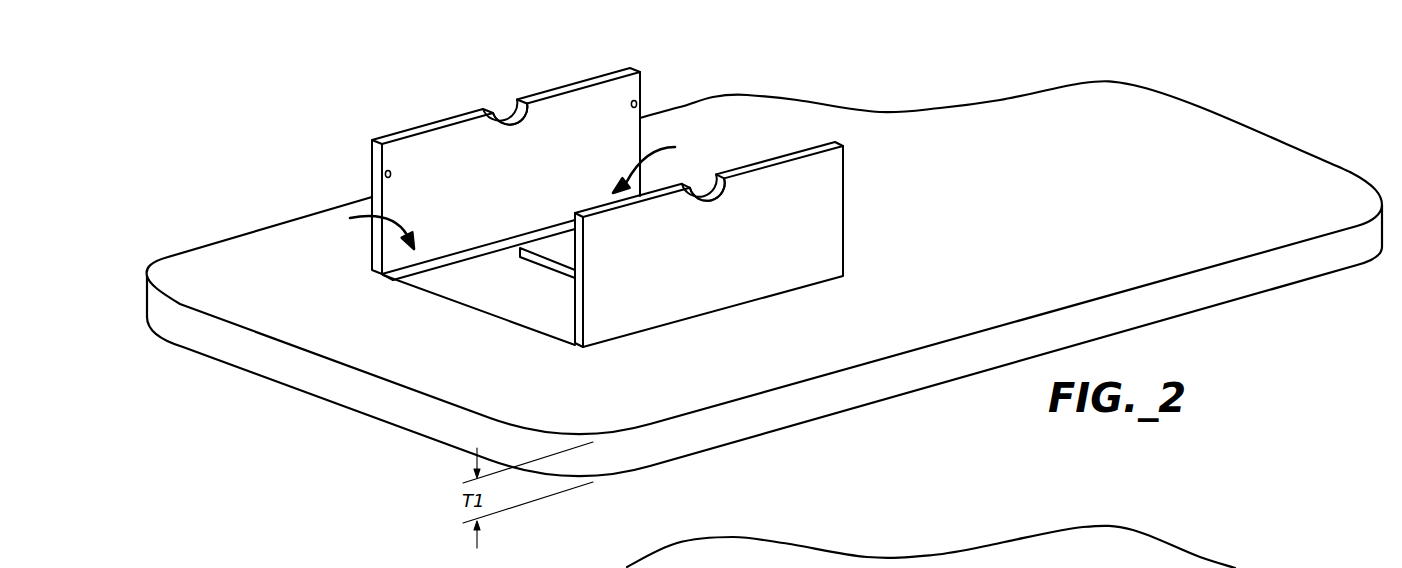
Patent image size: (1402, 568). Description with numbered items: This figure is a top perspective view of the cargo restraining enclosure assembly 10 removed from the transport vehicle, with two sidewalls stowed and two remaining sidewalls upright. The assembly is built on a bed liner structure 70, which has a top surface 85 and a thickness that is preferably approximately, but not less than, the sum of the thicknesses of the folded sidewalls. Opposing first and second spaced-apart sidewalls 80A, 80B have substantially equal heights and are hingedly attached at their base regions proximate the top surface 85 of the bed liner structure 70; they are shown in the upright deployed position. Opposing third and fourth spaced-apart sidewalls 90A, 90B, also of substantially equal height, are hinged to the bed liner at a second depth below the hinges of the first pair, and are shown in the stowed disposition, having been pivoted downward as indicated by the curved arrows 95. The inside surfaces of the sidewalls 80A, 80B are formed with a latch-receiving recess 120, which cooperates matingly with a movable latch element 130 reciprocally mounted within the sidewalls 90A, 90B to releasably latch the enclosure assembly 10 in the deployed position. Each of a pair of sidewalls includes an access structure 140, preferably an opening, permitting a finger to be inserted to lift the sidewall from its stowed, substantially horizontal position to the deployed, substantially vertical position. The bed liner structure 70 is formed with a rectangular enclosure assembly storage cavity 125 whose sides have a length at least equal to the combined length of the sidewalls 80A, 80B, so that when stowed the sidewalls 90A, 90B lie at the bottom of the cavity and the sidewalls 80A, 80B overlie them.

The enclosure assembly 10 is at (896, 79).
The bed liner structure 70 is at (1218, 148).
The top surface 85 is at (1078, 222).
The first sidewall 80A is at (833, 220).
The second sidewall 80B is at (430, 160).
The third sidewall 90A is at (517, 290).
The fourth sidewall 90B is at (563, 248).
The curved arrows 95 is at (370, 199).
The latch-receiving recess 120 is at (385, 173).
The enclosure assembly storage cavity 125 is at (551, 321).
The movable latch element 130 is at (387, 279).
The access structure 140 is at (505, 96).